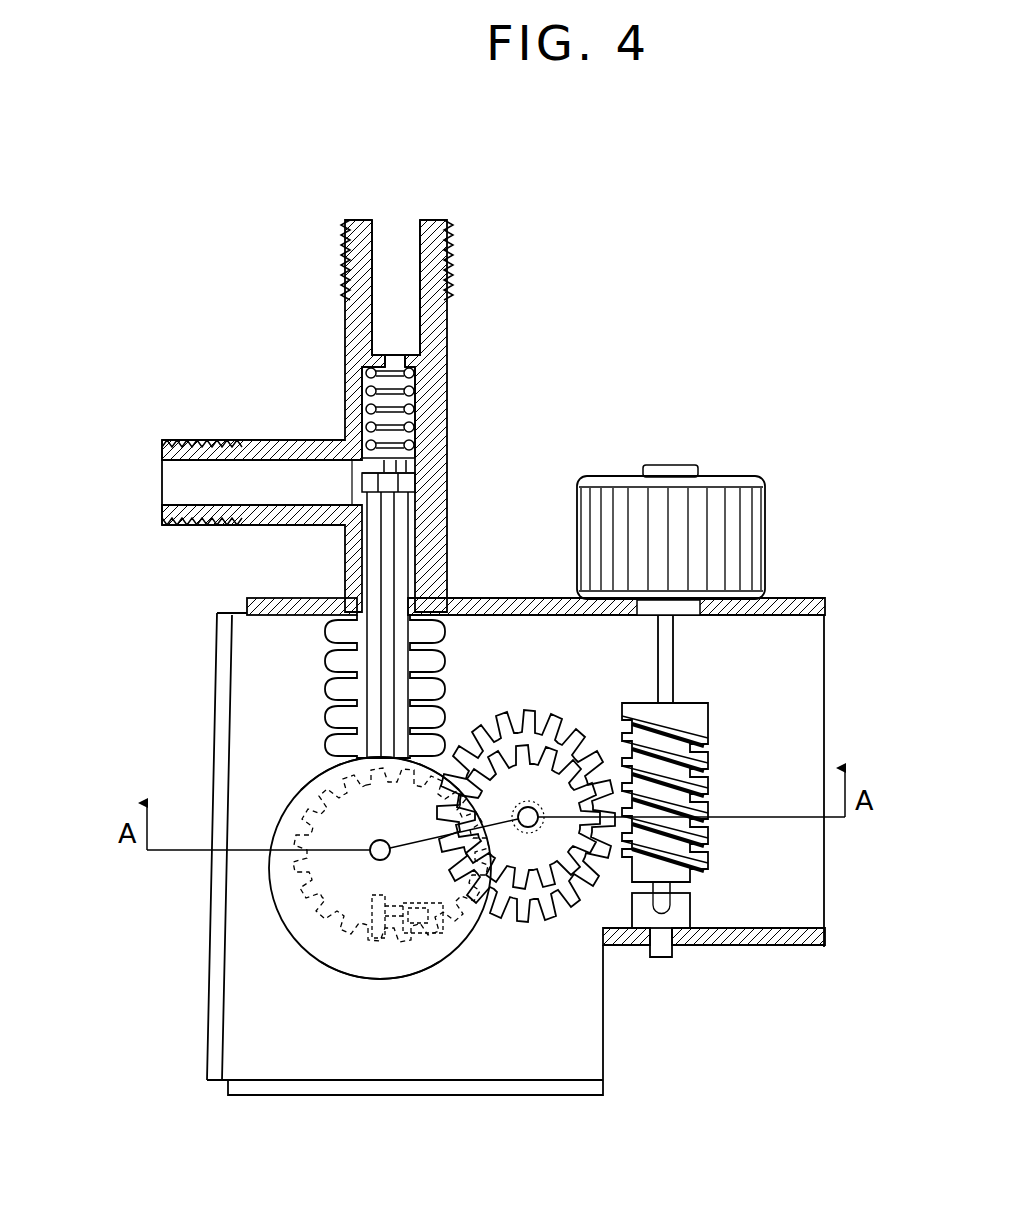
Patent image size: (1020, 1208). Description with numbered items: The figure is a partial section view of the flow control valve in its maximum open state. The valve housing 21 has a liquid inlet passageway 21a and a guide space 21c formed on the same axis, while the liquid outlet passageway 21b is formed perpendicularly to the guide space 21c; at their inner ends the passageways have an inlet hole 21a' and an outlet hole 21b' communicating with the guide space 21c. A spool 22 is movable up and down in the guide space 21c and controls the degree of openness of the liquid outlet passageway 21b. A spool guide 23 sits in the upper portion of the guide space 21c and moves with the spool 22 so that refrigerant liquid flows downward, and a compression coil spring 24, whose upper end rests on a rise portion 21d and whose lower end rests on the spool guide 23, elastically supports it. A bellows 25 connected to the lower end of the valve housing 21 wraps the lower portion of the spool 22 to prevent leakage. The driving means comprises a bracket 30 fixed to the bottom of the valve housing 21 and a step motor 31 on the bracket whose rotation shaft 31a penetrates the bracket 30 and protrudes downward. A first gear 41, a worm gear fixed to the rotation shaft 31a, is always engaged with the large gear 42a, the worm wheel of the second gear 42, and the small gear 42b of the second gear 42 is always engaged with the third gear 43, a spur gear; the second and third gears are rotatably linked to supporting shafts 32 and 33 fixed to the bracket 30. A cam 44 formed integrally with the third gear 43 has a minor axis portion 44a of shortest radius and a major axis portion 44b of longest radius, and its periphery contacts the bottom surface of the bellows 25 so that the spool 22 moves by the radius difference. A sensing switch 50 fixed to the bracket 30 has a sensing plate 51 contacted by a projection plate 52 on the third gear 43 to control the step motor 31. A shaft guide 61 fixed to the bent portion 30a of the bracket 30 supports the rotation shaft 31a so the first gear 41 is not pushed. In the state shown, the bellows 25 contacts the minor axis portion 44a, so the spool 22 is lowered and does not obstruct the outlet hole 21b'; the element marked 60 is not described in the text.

The valve housing 21 is at (348, 310).
The liquid inlet passageway 21a is at (432, 246).
The inlet hole 21a' is at (310, 341).
The liquid outlet passageway 21b is at (196, 482).
The outlet hole 21b' is at (276, 454).
The guide space 21c is at (387, 402).
The rise portion 21d is at (413, 380).
The spool 22 is at (392, 532).
The spool guide 23 is at (393, 465).
The compression coil spring 24 is at (413, 412).
The bellows 25 is at (330, 672).
The bracket 30 is at (765, 695).
The bent portion 30a is at (826, 937).
The step motor 31 is at (625, 476).
The rotation shaft 31a is at (675, 660).
The supporting shaft 32 is at (518, 806).
The supporting shaft 33 is at (370, 847).
The first gear 41 is at (707, 853).
The second gear 42 is at (529, 692).
The large gear 42a is at (517, 920).
The small gear 42b is at (557, 907).
The third gear 43 is at (320, 910).
The cam 44 is at (318, 947).
The minor axis portion 44a is at (380, 754).
The major axis portion 44b is at (378, 980).
The sensing switch 50 is at (443, 905).
The sensing plate 51 is at (398, 920).
The projection plate 52 is at (370, 912).
The stopper 60 is at (664, 957).
The shaft guide 61 is at (668, 910).